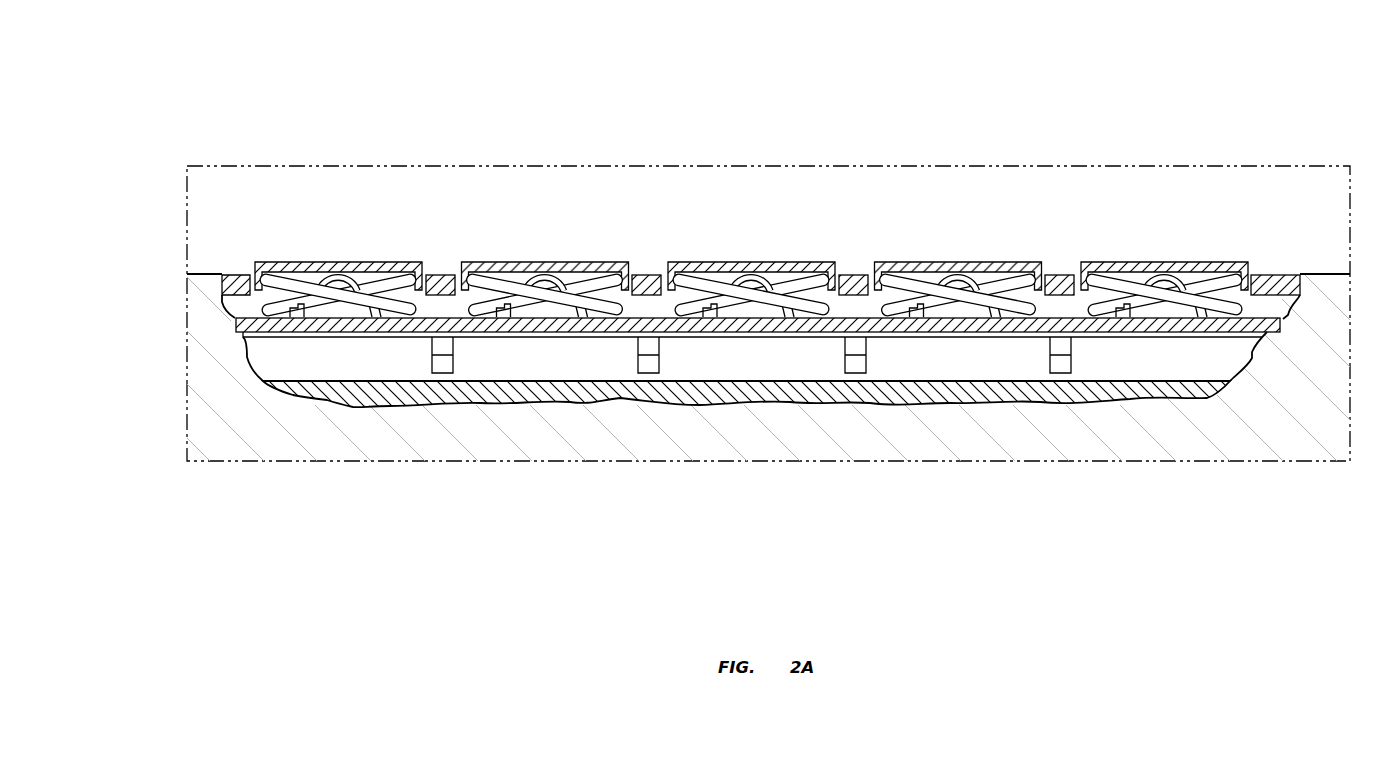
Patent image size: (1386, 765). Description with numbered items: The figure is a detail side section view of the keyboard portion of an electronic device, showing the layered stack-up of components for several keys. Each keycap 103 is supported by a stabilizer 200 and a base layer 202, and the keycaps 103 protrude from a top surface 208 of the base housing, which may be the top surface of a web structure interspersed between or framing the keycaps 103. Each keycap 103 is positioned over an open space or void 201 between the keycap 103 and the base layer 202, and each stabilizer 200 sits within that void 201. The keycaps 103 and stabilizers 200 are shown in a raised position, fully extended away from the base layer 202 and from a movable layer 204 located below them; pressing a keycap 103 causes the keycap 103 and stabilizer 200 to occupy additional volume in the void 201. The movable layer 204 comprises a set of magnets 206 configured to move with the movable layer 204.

The keycap 103 is at (545, 262).
The stabilizer 200 is at (723, 293).
The void 201 is at (268, 295).
The base layer 202 is at (1188, 328).
The movable layer 204 is at (295, 367).
The magnet 206 is at (443, 365).
The top surface 208 is at (440, 275).